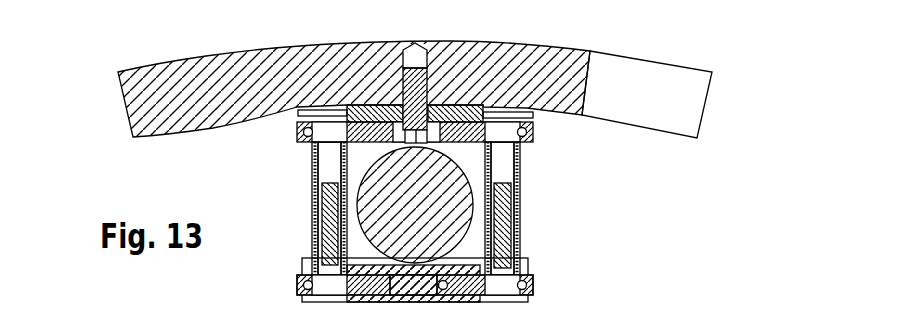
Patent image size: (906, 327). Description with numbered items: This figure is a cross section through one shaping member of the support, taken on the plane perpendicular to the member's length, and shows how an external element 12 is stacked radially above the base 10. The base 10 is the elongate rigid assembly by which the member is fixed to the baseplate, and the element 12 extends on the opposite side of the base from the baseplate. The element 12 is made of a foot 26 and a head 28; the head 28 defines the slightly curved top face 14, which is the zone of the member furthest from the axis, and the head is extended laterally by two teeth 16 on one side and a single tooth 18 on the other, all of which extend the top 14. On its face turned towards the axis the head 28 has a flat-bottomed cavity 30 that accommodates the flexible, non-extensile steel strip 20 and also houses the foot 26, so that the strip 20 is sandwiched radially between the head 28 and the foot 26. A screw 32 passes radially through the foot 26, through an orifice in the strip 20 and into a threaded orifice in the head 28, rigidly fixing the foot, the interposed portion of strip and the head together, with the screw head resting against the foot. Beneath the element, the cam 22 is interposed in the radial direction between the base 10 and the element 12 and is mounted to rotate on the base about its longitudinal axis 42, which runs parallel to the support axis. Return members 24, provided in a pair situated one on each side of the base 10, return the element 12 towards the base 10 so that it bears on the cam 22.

The base 10 is at (423, 290).
The external element 12 is at (160, 106).
The top face 14 is at (411, 95).
The teeth 16 is at (665, 97).
The tooth 18 is at (193, 104).
The strip 20 is at (459, 106).
The cam 22 is at (392, 223).
The return members 24 is at (314, 203).
The foot 26 is at (498, 162).
The head 28 is at (513, 66).
The cavity 30 is at (357, 162).
The screw 32 is at (412, 88).
The longitudinal axis 42 is at (413, 42).